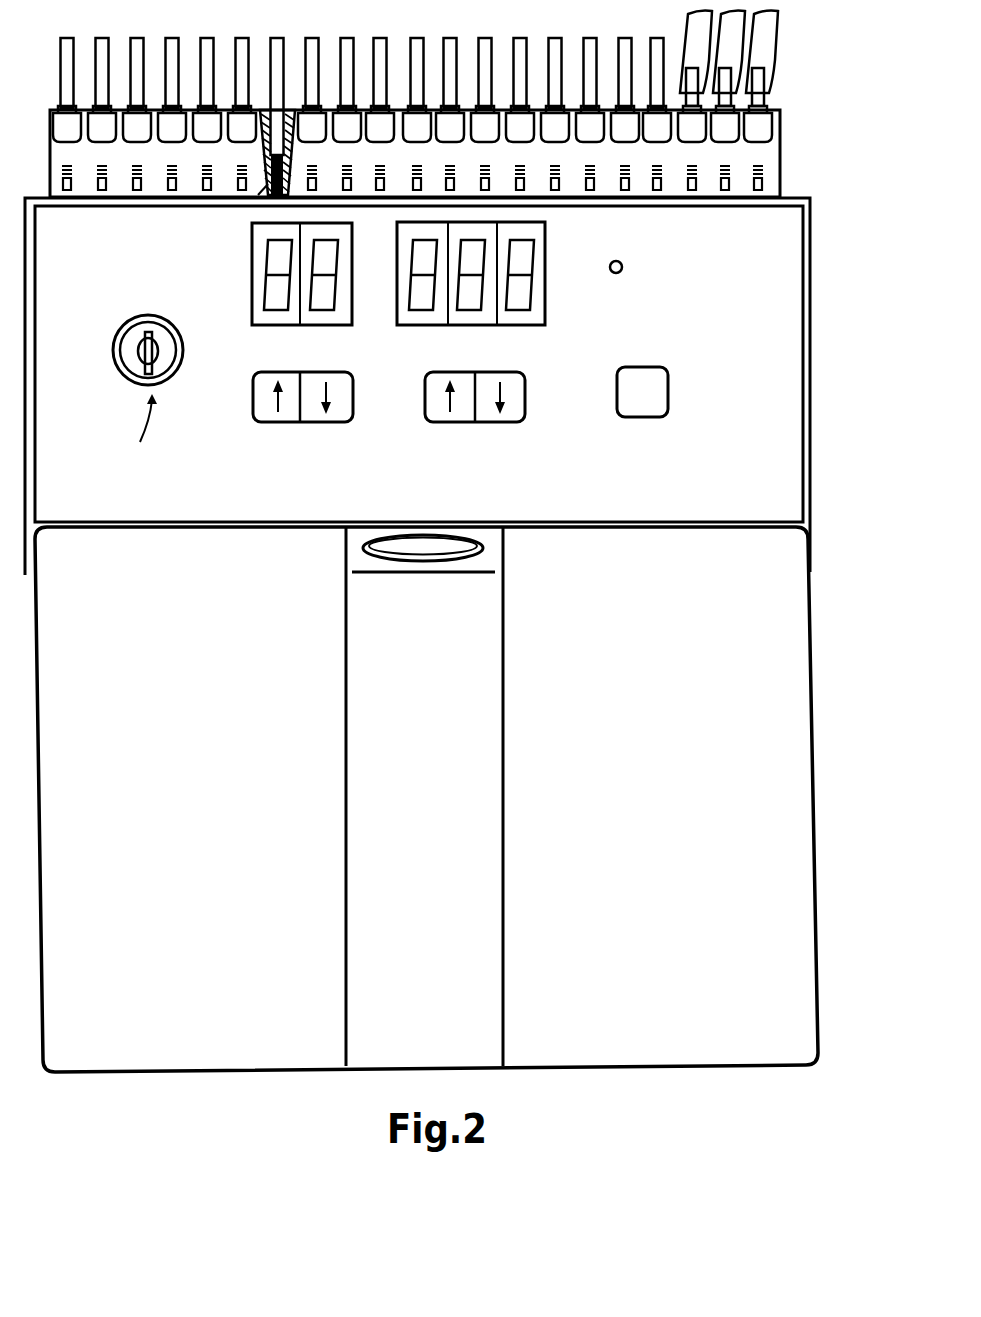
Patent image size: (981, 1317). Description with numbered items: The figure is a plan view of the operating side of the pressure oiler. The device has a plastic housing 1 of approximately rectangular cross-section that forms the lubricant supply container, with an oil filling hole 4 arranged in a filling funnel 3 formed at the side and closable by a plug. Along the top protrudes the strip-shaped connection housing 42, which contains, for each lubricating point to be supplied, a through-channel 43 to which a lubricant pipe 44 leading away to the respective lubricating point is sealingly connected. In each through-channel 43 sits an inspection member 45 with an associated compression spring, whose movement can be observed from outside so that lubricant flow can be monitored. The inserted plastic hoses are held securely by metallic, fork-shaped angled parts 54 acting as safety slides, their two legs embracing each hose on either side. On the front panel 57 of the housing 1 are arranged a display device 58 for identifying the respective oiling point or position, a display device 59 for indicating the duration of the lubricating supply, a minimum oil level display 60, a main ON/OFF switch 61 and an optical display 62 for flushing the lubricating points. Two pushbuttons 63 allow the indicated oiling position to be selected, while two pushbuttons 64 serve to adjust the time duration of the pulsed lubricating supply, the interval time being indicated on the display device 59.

The housing 1 is at (787, 833).
The filling funnel 3 is at (446, 851).
The oil filling hole 4 is at (426, 557).
The connection housing 42 is at (773, 150).
The through-channel 43 is at (262, 154).
The lubricant pipe 44 is at (762, 52).
The inspection member 45 is at (268, 192).
The fork-shaped angled part 54 is at (766, 121).
The front panel 57 is at (778, 473).
The display device 58 is at (252, 269).
The display device 59 is at (556, 247).
The minimum oil level display 60 is at (620, 273).
The main ON/OFF switch 61 is at (165, 362).
The optical display 62 is at (637, 400).
The pushbuttons 63 is at (302, 422).
The pushbuttons 64 is at (475, 422).